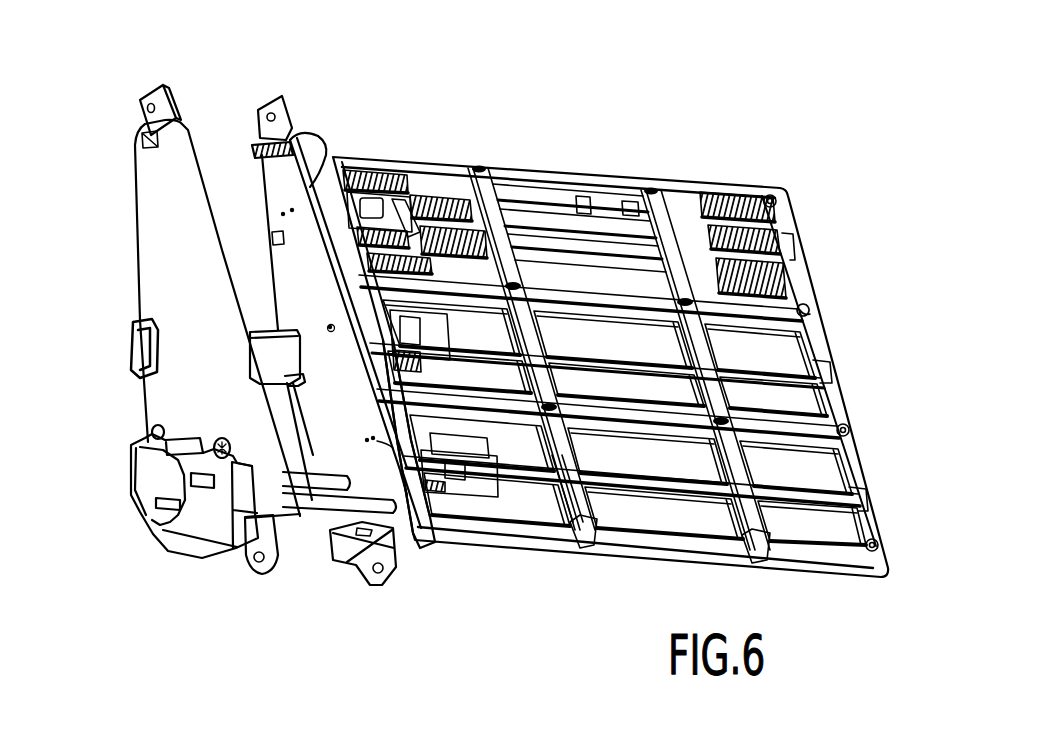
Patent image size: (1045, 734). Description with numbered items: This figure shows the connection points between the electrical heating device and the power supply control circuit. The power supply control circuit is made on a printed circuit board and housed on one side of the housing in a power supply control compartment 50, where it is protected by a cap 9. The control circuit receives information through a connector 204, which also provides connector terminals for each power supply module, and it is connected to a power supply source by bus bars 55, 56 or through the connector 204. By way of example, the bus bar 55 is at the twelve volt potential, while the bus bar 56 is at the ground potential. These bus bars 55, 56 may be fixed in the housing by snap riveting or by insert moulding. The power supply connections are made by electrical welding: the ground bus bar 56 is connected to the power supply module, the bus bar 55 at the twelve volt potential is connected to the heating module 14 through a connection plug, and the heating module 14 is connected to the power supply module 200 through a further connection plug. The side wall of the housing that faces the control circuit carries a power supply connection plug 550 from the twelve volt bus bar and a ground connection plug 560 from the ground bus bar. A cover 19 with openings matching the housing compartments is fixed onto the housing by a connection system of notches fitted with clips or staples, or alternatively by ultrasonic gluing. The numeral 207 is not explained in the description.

The heating module 14 is at (722, 193).
The cover 19 is at (553, 500).
The power supply module 200 is at (457, 452).
The power supply control compartment 50 is at (212, 139).
The ground connection plug 560 is at (291, 202).
The fastening point 207 is at (330, 327).
The connector 204 is at (262, 336).
The cap 9 is at (207, 508).
The bus bar 55 is at (308, 506).
The bus bar 56 is at (340, 506).
The power supply connection plug 550 is at (413, 533).